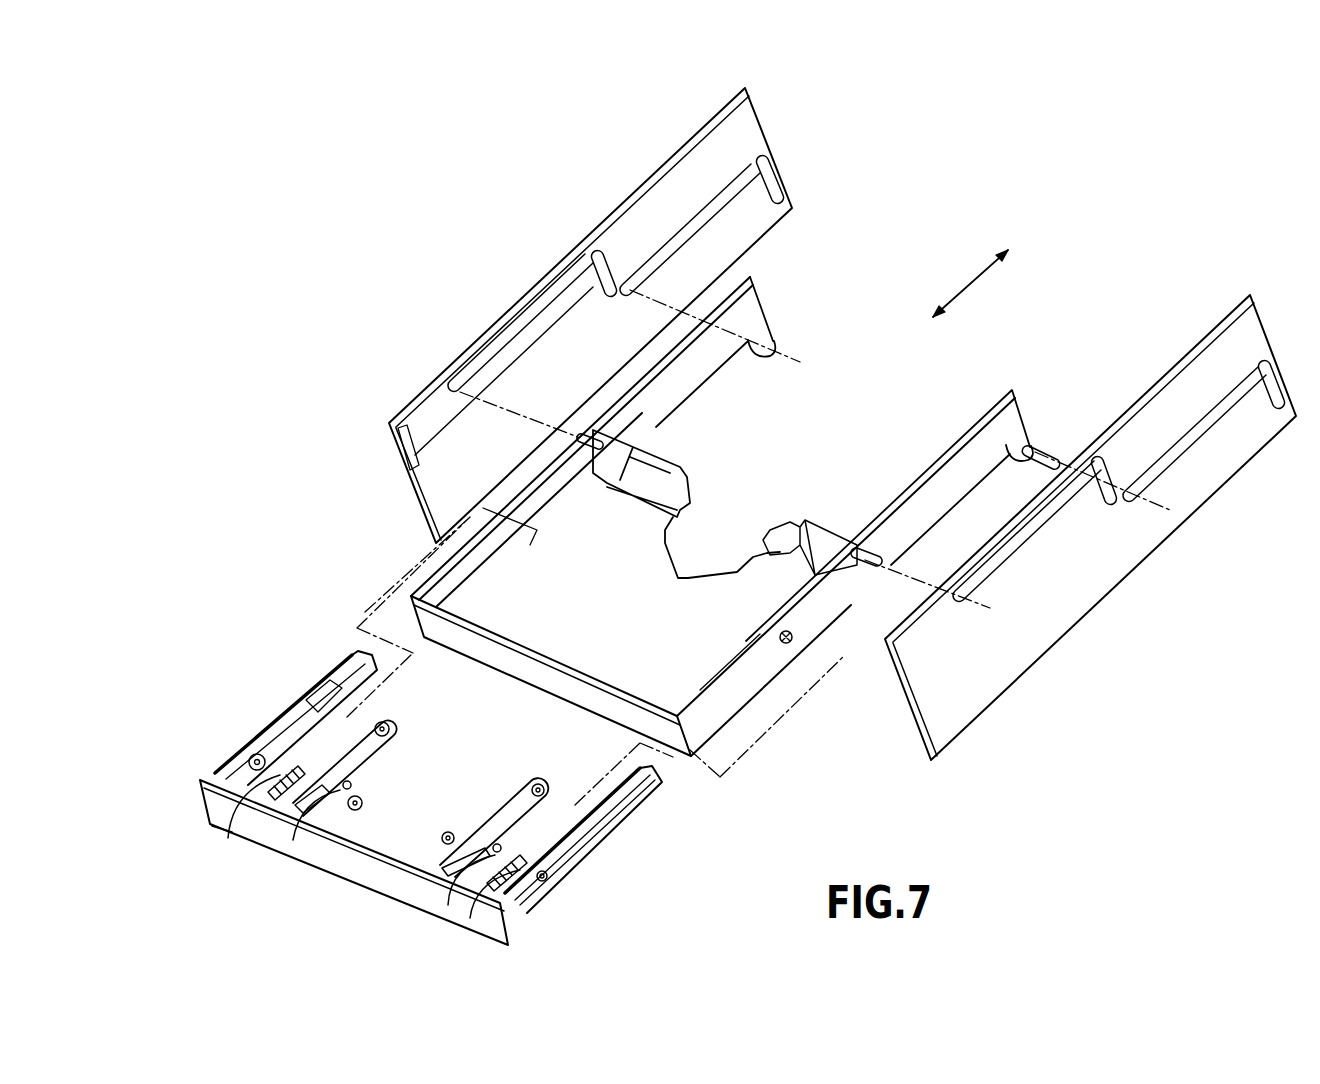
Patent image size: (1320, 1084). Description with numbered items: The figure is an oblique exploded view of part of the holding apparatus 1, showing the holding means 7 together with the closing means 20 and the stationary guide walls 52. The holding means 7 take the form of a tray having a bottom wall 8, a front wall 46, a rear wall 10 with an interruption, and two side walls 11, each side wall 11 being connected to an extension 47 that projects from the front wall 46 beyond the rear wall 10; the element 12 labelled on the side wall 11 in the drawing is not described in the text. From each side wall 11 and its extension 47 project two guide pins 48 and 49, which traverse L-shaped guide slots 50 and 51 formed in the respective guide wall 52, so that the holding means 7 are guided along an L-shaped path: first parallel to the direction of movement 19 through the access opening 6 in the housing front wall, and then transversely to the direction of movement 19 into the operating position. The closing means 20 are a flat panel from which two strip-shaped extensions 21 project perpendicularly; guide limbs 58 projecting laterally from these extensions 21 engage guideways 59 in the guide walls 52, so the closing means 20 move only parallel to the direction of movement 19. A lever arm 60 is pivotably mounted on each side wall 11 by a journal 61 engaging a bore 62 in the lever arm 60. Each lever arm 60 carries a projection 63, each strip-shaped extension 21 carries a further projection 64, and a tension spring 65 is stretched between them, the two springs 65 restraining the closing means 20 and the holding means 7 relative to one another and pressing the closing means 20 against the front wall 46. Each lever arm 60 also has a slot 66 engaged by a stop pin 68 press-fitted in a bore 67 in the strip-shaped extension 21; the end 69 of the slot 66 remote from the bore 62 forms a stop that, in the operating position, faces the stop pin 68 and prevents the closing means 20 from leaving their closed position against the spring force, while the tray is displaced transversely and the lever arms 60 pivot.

The holding apparatus 1 is at (1072, 762).
The access opening 6 is at (398, 448).
The holding means 7 is at (738, 724).
The bottom wall 8 is at (692, 586).
The rear wall 10 is at (672, 514).
The side walls 11 is at (546, 501).
The rail edge 12 is at (726, 648).
The direction of movement 19 is at (967, 281).
The closing means 20 is at (372, 872).
The strip-shaped extensions 21 is at (352, 666).
The front wall 46 is at (552, 685).
The extension 47 is at (688, 392).
The guide pin 48 is at (594, 423).
The guide pin 49 is at (1042, 454).
The guide slot 50 is at (529, 316).
The guide slot 51 is at (683, 231).
The guide wall 52 is at (643, 208).
The guide limbs 58 is at (598, 838).
The guideways 59 is at (467, 405).
The lever arm 60 is at (378, 740).
The journal 61 is at (788, 644).
The bore 62 is at (390, 730).
The projection 63 is at (350, 788).
The further projection 64 is at (230, 831).
The tension spring 65 is at (285, 760).
The slot 66 is at (312, 820).
The bore 67 is at (262, 755).
The stop pin 68 is at (357, 810).
The end of slot 69 is at (258, 838).